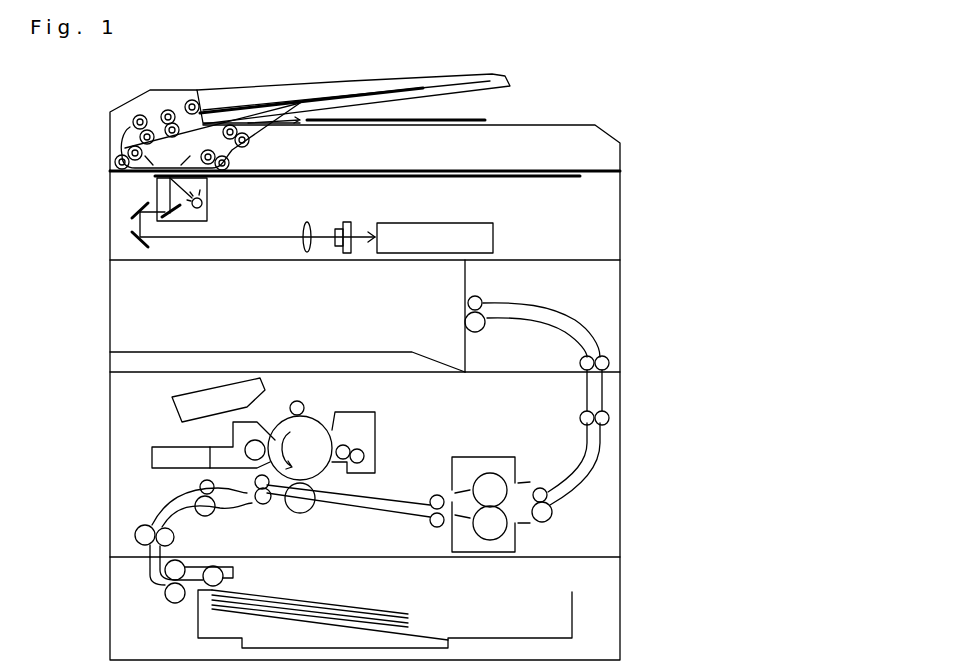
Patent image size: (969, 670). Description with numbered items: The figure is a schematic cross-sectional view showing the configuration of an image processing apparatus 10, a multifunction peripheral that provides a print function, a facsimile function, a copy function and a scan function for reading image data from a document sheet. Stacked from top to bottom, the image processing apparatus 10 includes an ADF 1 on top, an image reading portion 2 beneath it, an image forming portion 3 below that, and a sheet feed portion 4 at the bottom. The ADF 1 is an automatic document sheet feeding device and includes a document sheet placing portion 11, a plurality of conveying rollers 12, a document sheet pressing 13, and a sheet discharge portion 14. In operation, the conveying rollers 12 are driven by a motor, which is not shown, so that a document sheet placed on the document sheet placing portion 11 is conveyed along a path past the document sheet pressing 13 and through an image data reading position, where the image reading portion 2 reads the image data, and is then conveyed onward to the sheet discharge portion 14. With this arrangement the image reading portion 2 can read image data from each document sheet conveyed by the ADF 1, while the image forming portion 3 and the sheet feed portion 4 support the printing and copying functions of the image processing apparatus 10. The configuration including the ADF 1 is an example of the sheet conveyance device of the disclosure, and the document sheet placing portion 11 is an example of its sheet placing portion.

The image processing apparatus 10 is at (72, 103).
The ADF 1 is at (110, 129).
The image reading portion 2 is at (110, 228).
The image forming portion 3 is at (110, 414).
The sheet feed portion 4 is at (110, 611).
The document sheet placing portion 11 is at (373, 80).
The conveying rollers 12 is at (118, 163).
The document sheet pressing 13 is at (157, 167).
The sheet discharge portion 14 is at (542, 126).